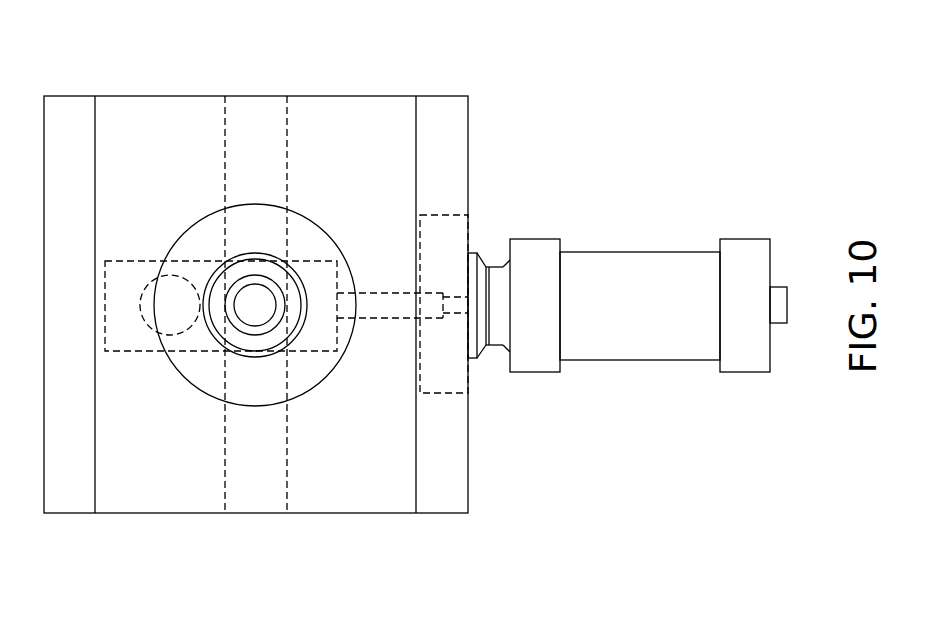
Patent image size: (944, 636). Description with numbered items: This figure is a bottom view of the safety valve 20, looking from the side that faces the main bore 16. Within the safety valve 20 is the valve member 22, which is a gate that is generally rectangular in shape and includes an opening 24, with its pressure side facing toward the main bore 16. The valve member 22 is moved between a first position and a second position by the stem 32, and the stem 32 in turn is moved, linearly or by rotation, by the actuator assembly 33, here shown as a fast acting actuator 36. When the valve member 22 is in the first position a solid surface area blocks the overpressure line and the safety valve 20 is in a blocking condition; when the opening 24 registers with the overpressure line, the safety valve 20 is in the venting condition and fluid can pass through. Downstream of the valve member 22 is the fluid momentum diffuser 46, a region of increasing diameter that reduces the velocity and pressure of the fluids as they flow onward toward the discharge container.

The main bore 16 is at (252, 110).
The safety valve 20 is at (138, 531).
The valve member 22 is at (134, 272).
The opening 24 is at (175, 312).
The stem 32 is at (390, 290).
The actuator assembly 33 is at (627, 397).
The fast acting actuator 36 is at (650, 248).
The fluid momentum diffuser 46 is at (306, 216).